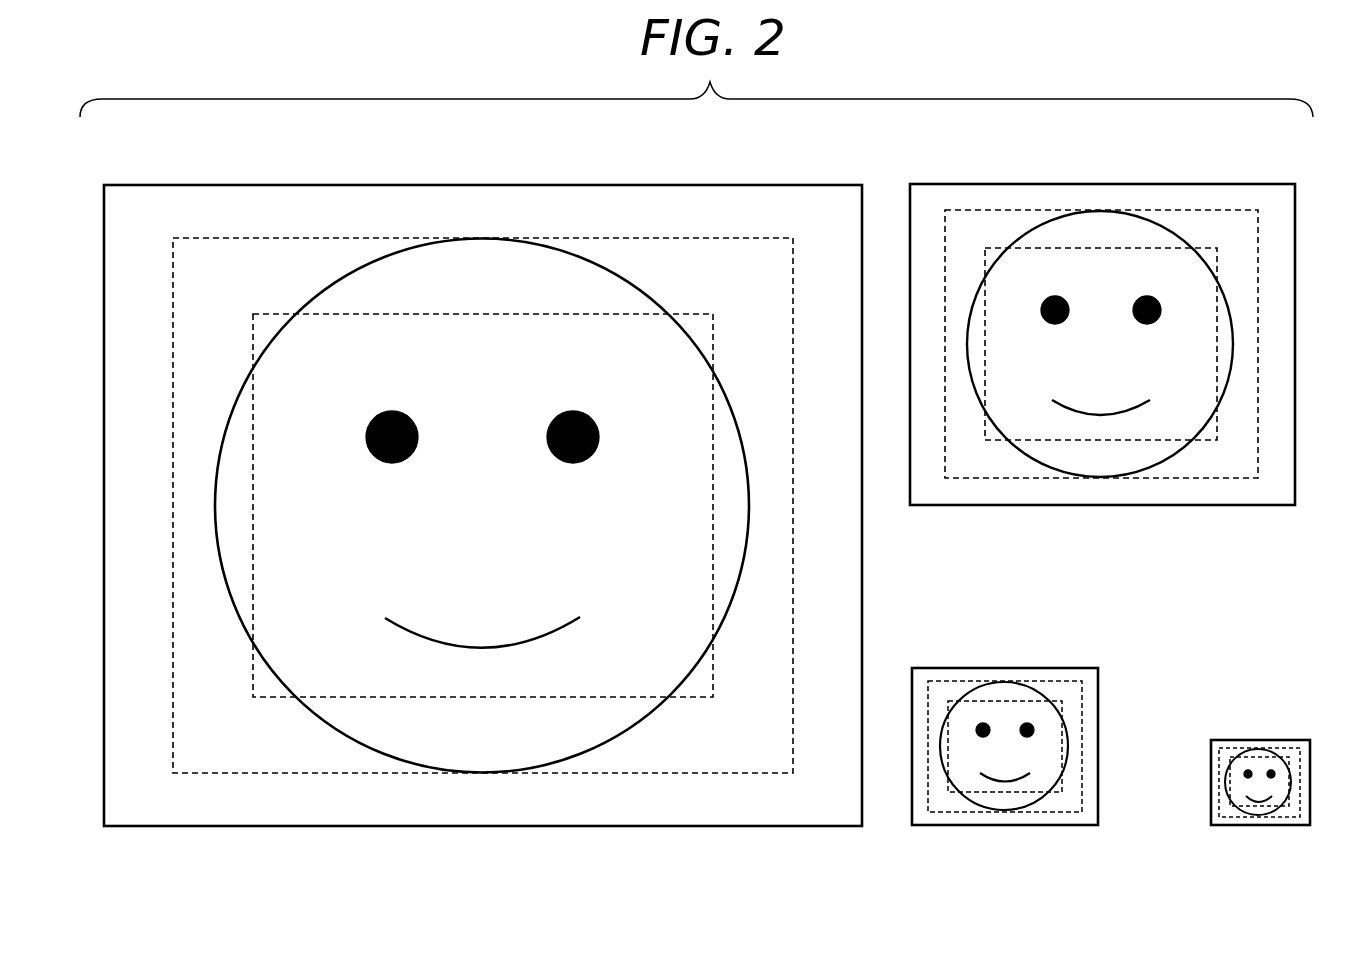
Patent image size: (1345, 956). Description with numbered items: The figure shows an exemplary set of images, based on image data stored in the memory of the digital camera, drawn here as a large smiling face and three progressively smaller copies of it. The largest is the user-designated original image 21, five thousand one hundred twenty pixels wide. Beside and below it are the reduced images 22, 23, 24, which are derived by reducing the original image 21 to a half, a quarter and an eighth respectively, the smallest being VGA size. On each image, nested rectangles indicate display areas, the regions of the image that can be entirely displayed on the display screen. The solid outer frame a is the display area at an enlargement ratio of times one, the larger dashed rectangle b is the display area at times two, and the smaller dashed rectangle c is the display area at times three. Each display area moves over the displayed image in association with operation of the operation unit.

The display area a is at (862, 223).
The display area b is at (793, 279).
The display area c is at (713, 356).
The original image 21 is at (277, 811).
The reduced image 22 is at (975, 496).
The reduced image 23 is at (934, 813).
The reduced image 24 is at (1232, 826).